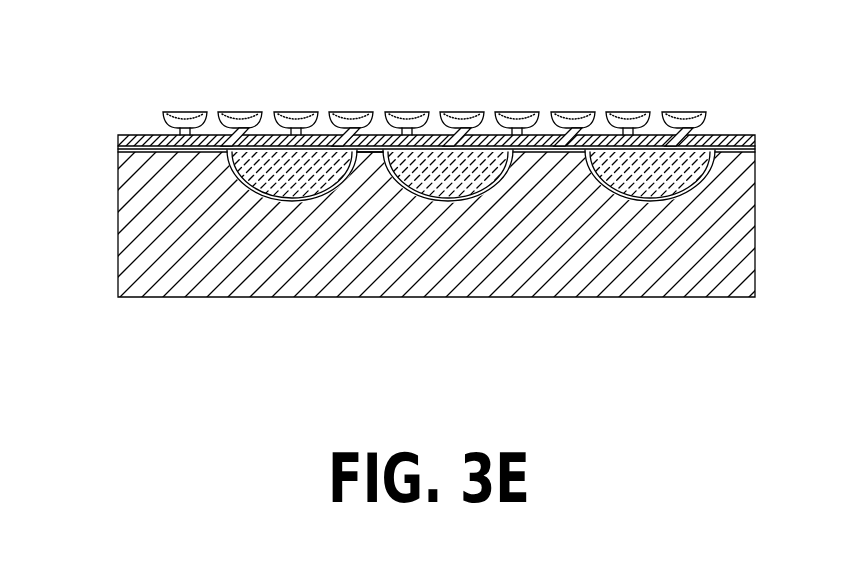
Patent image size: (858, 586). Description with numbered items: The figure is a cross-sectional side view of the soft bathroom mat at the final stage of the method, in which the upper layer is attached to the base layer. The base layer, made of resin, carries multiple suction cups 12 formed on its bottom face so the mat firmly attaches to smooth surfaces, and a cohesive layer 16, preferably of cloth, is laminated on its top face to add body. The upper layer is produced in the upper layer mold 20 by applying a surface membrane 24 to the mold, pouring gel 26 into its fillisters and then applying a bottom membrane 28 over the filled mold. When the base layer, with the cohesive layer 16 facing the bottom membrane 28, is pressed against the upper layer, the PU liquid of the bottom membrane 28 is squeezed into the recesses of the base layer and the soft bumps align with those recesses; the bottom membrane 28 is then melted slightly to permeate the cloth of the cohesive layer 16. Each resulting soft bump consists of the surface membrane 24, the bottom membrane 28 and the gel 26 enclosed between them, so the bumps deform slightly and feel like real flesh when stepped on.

The suction cups 12 is at (468, 118).
The cohesive layer 16 is at (732, 148).
The upper layer mold 20 is at (743, 210).
The surface membrane 24 is at (373, 155).
The gel 26 is at (300, 168).
The bottom membrane 28 is at (603, 150).